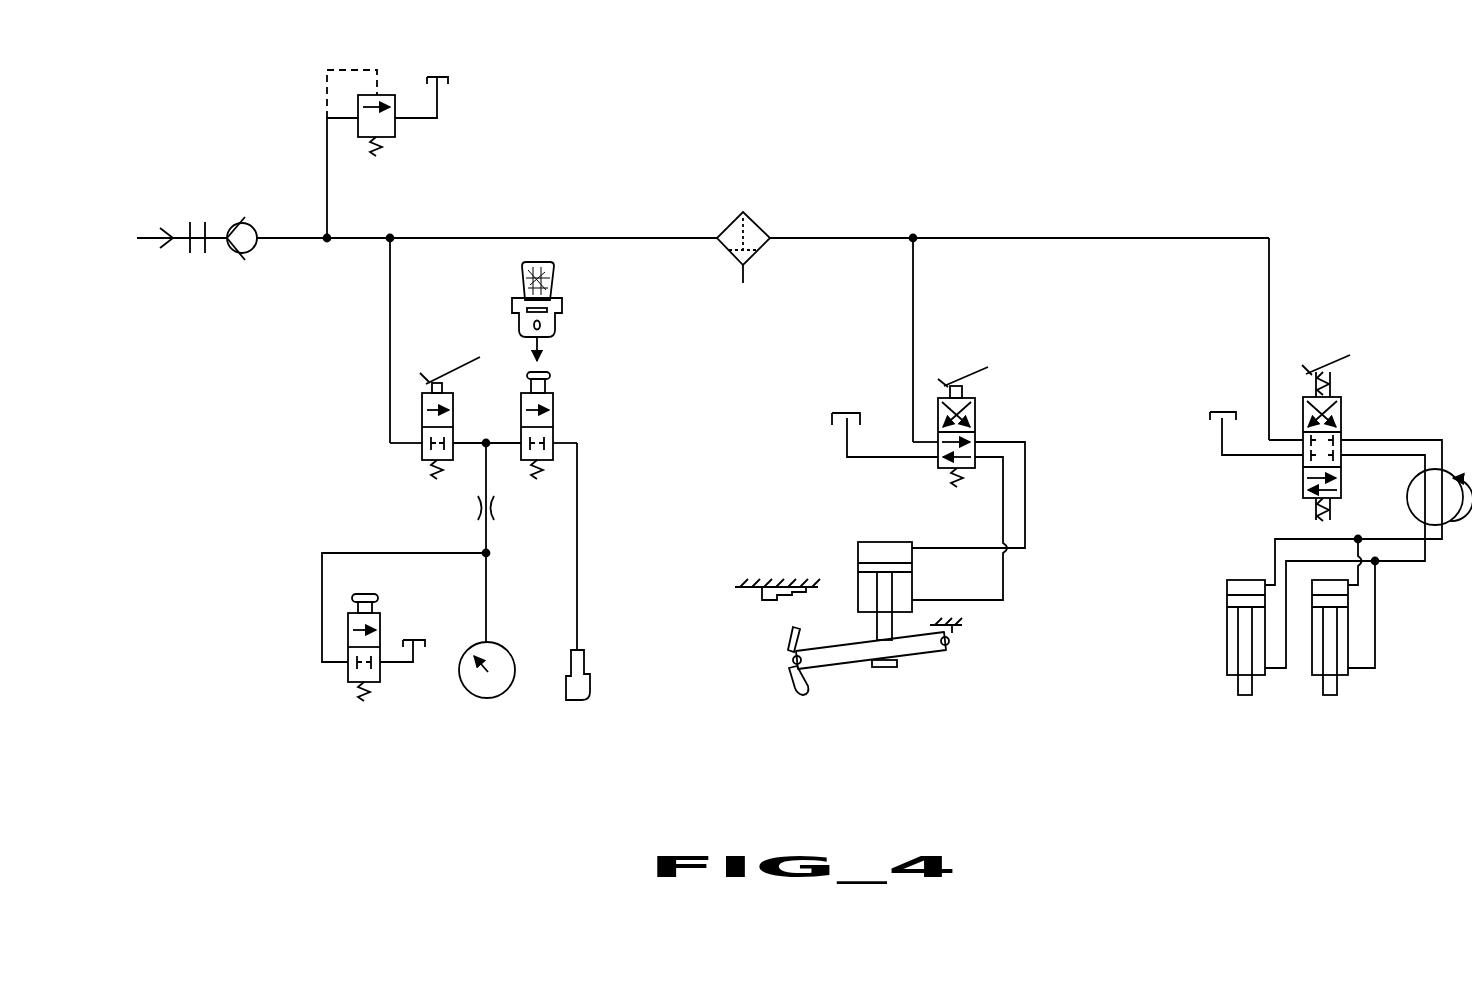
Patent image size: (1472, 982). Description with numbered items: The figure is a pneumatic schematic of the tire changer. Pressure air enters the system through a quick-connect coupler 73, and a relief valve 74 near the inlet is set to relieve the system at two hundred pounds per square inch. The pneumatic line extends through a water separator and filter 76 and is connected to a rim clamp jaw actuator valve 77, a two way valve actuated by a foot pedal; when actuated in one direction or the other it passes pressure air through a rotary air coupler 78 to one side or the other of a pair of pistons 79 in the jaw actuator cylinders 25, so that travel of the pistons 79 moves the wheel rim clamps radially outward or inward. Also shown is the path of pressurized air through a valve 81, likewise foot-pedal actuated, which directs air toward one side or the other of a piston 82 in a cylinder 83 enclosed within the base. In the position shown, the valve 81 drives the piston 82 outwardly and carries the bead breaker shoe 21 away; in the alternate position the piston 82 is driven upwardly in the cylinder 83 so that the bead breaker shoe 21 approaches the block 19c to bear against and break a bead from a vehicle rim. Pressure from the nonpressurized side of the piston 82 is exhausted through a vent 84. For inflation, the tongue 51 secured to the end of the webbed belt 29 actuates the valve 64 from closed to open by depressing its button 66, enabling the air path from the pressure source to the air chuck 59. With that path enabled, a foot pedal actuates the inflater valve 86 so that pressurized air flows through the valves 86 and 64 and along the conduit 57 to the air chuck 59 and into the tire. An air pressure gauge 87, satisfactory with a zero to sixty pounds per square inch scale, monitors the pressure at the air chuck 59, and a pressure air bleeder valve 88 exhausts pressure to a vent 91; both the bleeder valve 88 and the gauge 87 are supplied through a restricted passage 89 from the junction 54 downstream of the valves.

The quick-connect coupler 73 is at (237, 222).
The relief valve 74 is at (395, 130).
The water separator and filter 76 is at (755, 222).
The webbed belt 29 is at (552, 270).
The tongue 51 is at (562, 320).
The button 66 is at (550, 376).
The valve 64 is at (553, 420).
The line junction 54 is at (506, 440).
The inflater valve 86 is at (422, 456).
The restricted passage 89 is at (476, 507).
The air line 57 is at (580, 492).
The air chuck 59 is at (565, 693).
The vent 91 is at (415, 628).
The pressure air bleeder valve 88 is at (348, 676).
The air pressure gauge 87 is at (462, 678).
The vent 84 is at (830, 413).
The valve 81 is at (977, 408).
The cylinder 83 is at (858, 548).
The piston 82 is at (905, 568).
The block 19c is at (770, 600).
The bead breaker shoe 21 is at (785, 665).
The rim clamp jaw actuator valve 77 is at (1341, 406).
The rotary air coupler 78 is at (1408, 503).
The pistons 79 is at (1227, 600).
The jaw actuator cylinders 25 is at (1227, 673).